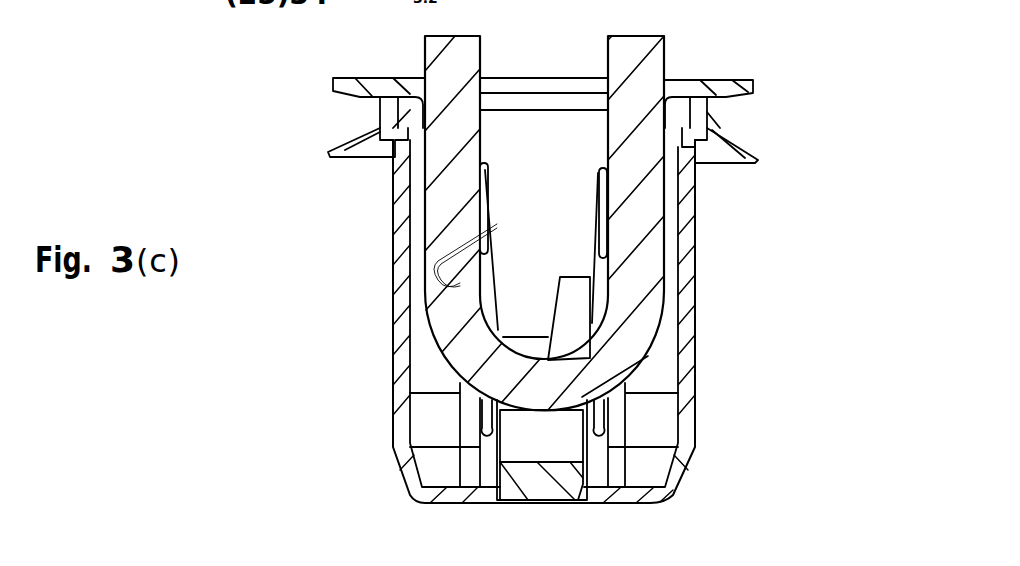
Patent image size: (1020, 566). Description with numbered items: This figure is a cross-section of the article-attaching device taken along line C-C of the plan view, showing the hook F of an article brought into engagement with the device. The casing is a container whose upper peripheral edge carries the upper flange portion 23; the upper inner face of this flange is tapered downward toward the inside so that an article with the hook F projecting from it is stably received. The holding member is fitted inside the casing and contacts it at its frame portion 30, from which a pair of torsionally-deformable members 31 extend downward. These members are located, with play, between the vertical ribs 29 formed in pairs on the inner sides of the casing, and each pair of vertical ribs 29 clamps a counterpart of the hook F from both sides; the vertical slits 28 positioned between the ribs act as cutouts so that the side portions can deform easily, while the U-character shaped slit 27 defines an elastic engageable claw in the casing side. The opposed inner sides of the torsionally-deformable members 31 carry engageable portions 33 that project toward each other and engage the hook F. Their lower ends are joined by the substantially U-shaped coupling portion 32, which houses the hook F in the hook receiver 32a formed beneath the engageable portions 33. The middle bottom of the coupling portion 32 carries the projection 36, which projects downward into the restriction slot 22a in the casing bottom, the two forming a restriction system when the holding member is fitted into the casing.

The hook F is at (654, 47).
The upper flange portion 23 is at (735, 83).
The frame portion 30 is at (705, 109).
The restriction slot 22a is at (575, 504).
The U-character shaped slit 27 is at (496, 226).
The vertical slit 28 is at (488, 421).
The vertical rib 29 is at (470, 402).
The torsionally-deformable member 31 is at (573, 216).
The engageable portion 33 is at (563, 323).
The coupling portion 32 is at (500, 465).
The hook receiver 32a is at (513, 447).
The projection 36 is at (545, 493).